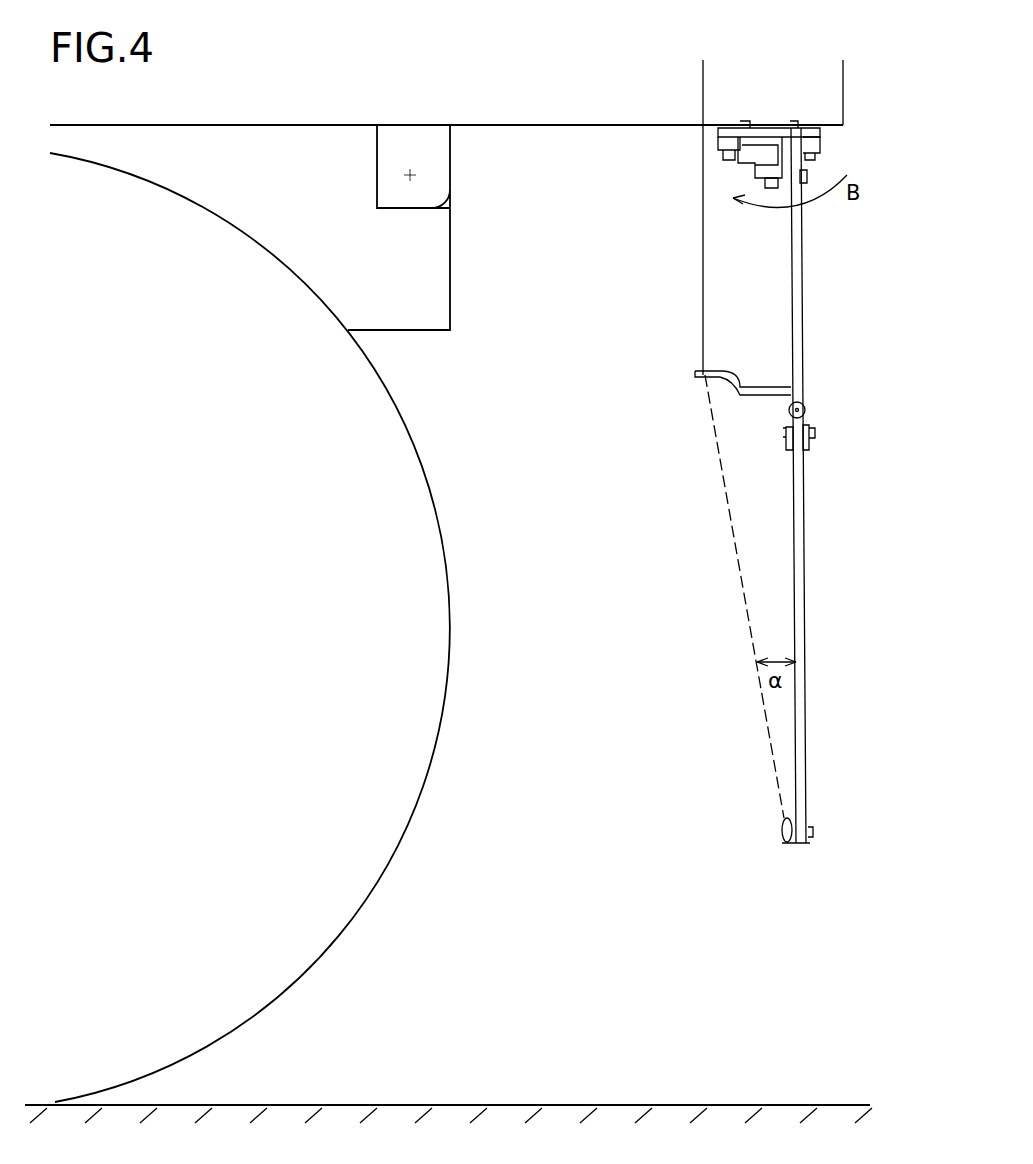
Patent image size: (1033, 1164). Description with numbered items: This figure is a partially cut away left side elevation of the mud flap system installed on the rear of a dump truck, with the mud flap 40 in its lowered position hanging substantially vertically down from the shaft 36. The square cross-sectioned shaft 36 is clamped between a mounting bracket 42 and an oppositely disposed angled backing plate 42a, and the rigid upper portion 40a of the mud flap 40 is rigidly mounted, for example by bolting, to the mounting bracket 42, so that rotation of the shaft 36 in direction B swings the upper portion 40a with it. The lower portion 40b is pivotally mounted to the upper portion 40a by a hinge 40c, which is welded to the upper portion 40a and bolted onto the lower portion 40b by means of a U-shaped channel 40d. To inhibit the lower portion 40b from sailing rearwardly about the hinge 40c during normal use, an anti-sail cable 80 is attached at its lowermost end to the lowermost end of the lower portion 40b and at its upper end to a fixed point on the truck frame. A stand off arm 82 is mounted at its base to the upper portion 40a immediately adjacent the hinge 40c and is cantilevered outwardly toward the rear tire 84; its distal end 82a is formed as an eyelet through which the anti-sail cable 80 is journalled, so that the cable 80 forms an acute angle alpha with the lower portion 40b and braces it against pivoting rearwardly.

The shaft 36 is at (770, 147).
The mud flap 40 is at (840, 485).
The upper portion 40a is at (802, 258).
The lower portion 40b is at (805, 548).
The hinge 40c is at (805, 410).
The U-shaped channel 40d is at (809, 445).
The mounting bracket 42 is at (787, 153).
The backing plate 42a is at (745, 168).
The anti-sail cable 80 is at (743, 588).
The stand off arm 82 is at (748, 387).
The distal end 82a is at (695, 372).
The rear tire 84 is at (403, 845).